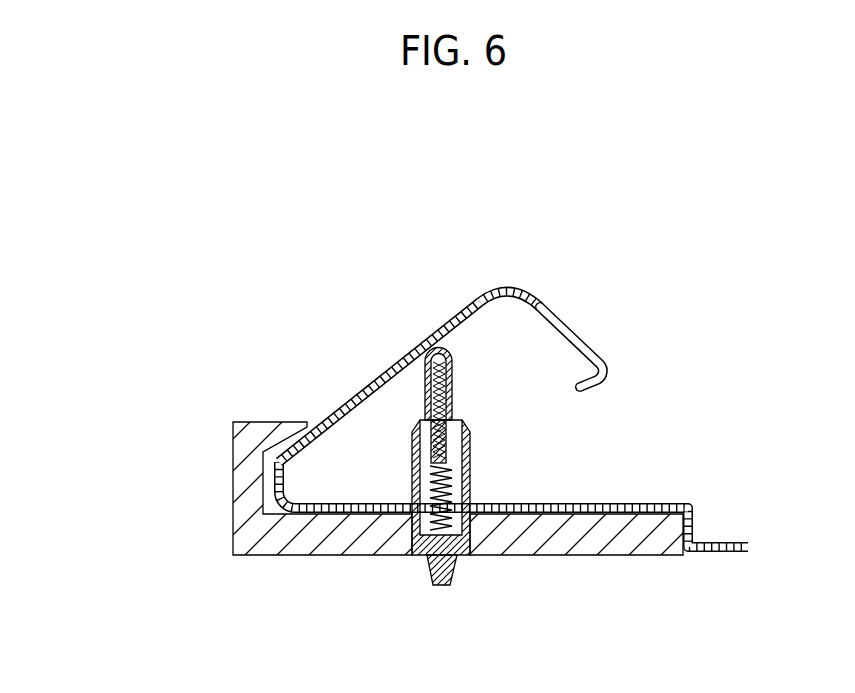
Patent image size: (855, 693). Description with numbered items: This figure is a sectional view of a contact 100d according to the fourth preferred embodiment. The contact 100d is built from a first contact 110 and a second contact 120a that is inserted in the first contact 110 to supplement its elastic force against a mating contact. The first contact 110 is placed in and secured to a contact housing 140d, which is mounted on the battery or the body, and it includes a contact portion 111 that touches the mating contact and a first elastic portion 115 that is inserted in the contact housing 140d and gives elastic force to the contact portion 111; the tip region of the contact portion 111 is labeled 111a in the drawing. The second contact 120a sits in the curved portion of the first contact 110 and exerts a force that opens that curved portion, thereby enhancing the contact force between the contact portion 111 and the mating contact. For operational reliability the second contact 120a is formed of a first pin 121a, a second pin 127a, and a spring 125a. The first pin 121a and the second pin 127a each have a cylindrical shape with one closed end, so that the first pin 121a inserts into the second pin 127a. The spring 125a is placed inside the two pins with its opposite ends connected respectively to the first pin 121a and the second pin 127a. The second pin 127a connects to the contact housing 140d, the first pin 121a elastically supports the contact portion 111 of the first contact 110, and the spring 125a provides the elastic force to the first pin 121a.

The contact 100d is at (308, 193).
The first contact 110 is at (143, 347).
The contact portion 111 is at (397, 363).
The contact portion 111a is at (511, 287).
The first elastic portion 115 is at (310, 511).
The second contact 120a is at (538, 367).
The first pin 121a is at (451, 358).
The spring 125a is at (449, 407).
The second pin 127a is at (469, 478).
The contact housing 140d is at (316, 534).